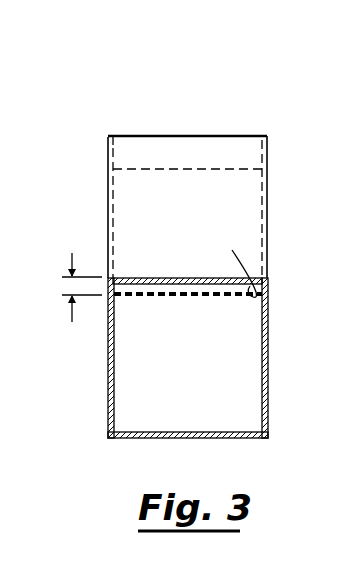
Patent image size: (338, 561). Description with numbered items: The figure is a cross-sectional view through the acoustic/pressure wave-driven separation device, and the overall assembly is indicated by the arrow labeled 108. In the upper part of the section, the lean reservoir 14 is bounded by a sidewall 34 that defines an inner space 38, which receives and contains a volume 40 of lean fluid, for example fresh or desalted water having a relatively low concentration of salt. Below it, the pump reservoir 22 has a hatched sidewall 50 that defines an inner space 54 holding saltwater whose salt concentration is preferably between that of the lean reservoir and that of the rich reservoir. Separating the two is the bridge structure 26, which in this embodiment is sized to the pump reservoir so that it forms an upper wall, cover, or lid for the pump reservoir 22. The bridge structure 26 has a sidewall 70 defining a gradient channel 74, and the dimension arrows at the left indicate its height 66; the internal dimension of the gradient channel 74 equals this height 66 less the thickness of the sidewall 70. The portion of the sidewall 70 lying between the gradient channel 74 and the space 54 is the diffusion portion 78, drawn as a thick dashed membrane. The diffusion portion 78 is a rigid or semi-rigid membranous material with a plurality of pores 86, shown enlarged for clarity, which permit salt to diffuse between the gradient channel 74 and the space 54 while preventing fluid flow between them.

The container assembly 108 is at (176, 241).
The lean reservoir 14 is at (268, 240).
The sidewall 34 is at (265, 170).
The inner space 38 is at (140, 183).
The volume of lean fluid 40 is at (204, 168).
The bridge structure 26 is at (127, 278).
The sidewall 70 is at (148, 278).
The gradient channel 74 is at (233, 266).
The diffusion portion 78 is at (205, 296).
The pores 86 is at (142, 297).
The height 66 is at (70, 287).
The pump reservoir 22 is at (106, 407).
The sidewall 50 is at (192, 358).
The inner space 54 is at (242, 367).